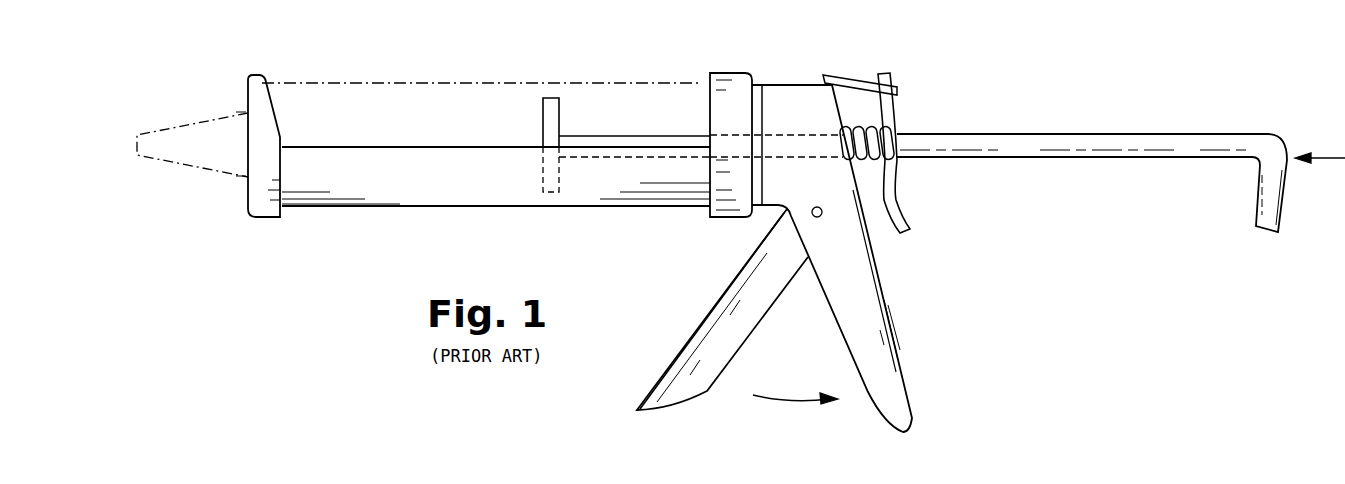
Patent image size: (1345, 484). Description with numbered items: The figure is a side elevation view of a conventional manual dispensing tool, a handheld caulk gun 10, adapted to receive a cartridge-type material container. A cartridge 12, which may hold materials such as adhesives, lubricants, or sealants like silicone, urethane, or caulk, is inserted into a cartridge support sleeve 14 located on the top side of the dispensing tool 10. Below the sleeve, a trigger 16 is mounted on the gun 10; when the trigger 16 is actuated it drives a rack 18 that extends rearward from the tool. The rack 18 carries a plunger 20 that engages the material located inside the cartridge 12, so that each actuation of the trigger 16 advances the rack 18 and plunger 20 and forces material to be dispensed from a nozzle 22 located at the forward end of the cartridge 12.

The caulk gun 10 is at (773, 72).
The cartridge 12 is at (677, 85).
The cartridge support sleeve 14 is at (402, 147).
The trigger 16 is at (706, 392).
The rack 18 is at (1030, 134).
The plunger 20 is at (551, 98).
The nozzle 22 is at (177, 165).